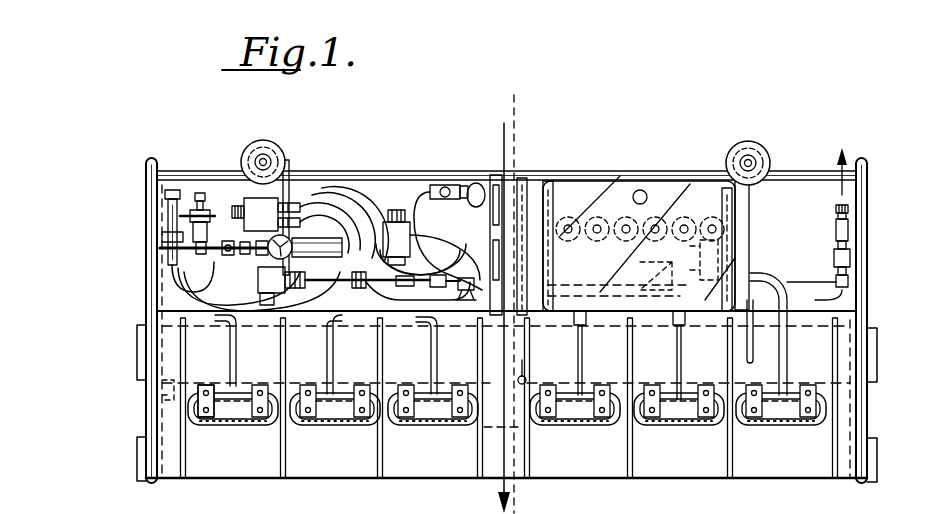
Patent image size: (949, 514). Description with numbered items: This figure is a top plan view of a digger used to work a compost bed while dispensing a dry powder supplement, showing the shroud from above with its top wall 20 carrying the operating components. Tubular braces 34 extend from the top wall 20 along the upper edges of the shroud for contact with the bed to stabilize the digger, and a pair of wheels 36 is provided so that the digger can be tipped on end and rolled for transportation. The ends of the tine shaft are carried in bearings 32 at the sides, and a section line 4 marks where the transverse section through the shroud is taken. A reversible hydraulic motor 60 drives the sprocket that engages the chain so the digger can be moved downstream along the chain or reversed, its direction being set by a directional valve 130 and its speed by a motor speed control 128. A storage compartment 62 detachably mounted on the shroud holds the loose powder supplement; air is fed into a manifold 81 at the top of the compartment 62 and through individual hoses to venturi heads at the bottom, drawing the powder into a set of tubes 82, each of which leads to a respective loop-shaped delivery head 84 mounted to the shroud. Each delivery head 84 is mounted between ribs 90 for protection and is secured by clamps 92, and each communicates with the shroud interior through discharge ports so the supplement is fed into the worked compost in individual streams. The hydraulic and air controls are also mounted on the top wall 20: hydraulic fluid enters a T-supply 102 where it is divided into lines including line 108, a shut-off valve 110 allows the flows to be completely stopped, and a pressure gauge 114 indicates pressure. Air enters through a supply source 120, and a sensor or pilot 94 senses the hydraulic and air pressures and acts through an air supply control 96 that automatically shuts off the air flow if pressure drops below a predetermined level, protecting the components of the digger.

The section line 4- 4 is at (470, 82).
The top wall 20 is at (422, 465).
The bearing 32 is at (150, 403).
The tubular braces 34 is at (152, 268).
The wheels 36 is at (268, 152).
The hydraulic motor 60 is at (433, 233).
The storage compartment 62 is at (672, 172).
The manifold 81 is at (650, 268).
The tubes 82 is at (233, 350).
The delivery head 84 is at (303, 427).
The ribs 90 is at (378, 463).
The clamps 92 is at (220, 425).
The sensor 94 is at (405, 286).
The air supply control 96 is at (277, 370).
The T-supply 102 is at (163, 243).
The line 108 is at (820, 300).
The shut-off valve 110 is at (173, 176).
The pressure gauge 114 is at (270, 258).
The supply source 120 is at (245, 137).
The motor speed control 128 is at (283, 200).
The directional valve 130 is at (268, 281).